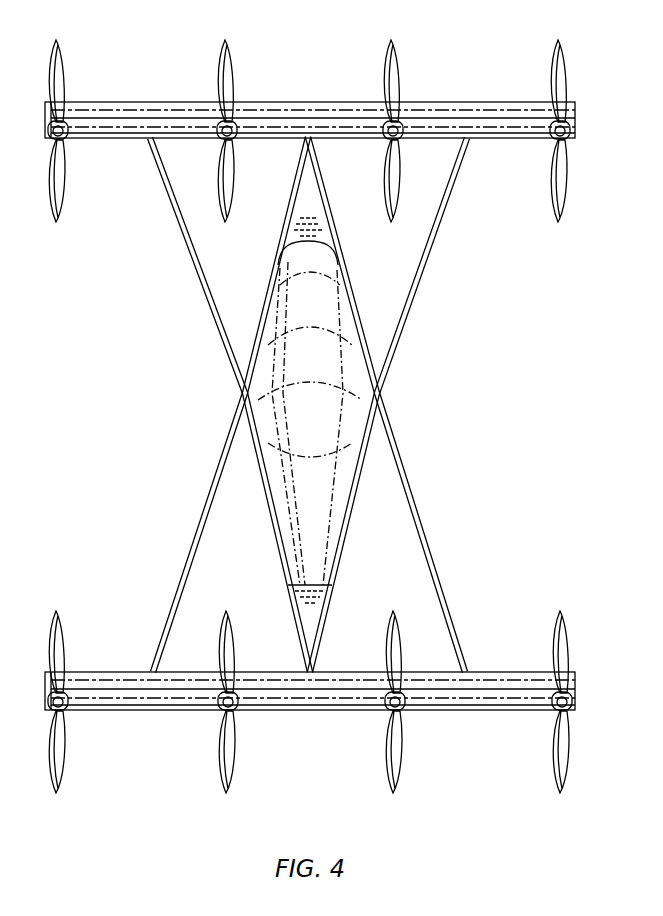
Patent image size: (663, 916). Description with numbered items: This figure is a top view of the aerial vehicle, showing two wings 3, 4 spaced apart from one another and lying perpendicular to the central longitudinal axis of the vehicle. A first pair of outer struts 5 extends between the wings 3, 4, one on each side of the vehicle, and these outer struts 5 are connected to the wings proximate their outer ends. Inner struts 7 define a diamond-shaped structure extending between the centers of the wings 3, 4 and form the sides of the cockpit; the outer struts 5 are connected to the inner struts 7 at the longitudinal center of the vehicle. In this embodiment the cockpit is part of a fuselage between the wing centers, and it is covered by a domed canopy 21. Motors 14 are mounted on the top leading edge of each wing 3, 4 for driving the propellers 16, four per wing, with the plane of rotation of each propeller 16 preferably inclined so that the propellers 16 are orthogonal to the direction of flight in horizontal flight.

The wing 3 is at (575, 680).
The wing 4 is at (373, 130).
The outer struts 5 is at (200, 292).
The inner struts 7 is at (275, 272).
The motors 14 is at (218, 140).
The propellers 16 is at (65, 77).
The domed canopy 21 is at (352, 424).